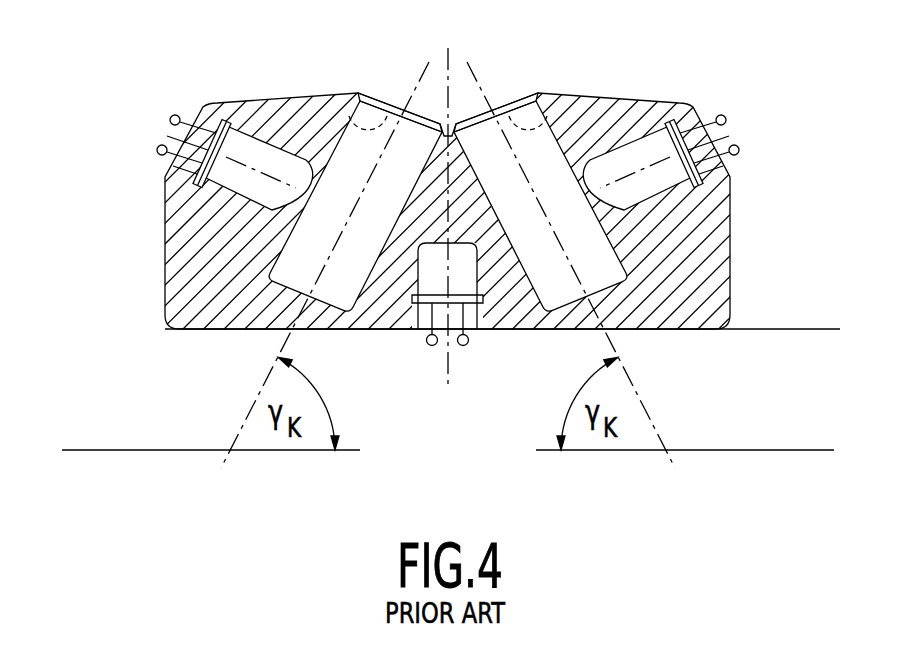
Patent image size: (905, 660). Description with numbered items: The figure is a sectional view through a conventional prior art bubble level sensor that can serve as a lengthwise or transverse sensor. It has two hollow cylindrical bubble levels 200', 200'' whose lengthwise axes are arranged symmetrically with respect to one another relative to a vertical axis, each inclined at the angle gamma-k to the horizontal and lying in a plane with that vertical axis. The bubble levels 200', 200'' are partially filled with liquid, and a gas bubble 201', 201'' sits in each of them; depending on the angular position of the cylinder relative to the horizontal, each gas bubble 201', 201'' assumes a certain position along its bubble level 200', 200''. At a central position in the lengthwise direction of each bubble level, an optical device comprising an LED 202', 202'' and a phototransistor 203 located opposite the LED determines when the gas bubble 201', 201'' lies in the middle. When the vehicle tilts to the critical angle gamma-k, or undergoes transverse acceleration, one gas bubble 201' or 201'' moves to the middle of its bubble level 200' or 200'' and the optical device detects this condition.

The bubble level 200' is at (564, 183).
The bubble level 200'' is at (342, 183).
The gas bubble 201' is at (516, 77).
The gas bubble 201'' is at (398, 77).
The LED 202' is at (699, 175).
The LED 202'' is at (198, 180).
The phototransistor 203 is at (437, 274).